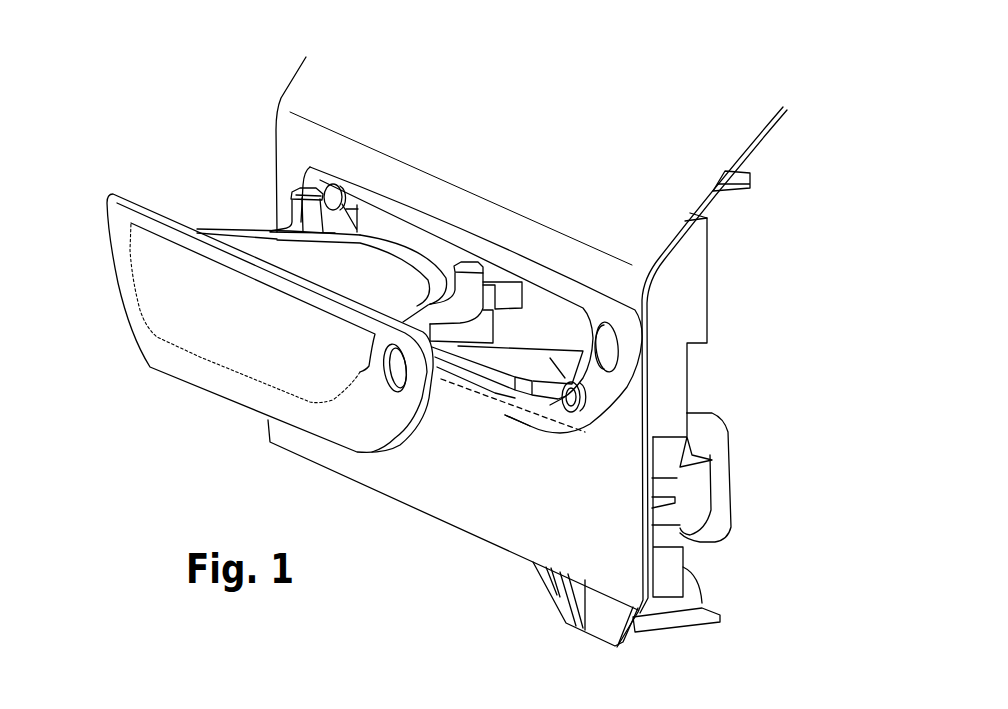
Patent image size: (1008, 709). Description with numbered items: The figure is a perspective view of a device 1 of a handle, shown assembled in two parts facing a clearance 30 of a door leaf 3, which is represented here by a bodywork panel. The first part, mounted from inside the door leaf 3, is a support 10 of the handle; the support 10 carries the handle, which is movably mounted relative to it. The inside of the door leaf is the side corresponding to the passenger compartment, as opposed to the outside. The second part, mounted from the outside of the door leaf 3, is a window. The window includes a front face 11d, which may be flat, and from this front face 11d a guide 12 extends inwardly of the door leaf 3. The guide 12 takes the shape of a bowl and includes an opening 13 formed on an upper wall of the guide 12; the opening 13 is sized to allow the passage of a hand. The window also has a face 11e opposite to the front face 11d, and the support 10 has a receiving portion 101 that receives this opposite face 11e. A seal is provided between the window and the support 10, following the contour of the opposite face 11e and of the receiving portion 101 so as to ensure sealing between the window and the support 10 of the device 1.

The device of the handle 1 is at (140, 107).
The door leaf 3 is at (268, 72).
The support of the handle 10 is at (785, 273).
The front face 11d is at (197, 367).
The opposite face 11e is at (130, 197).
The guide 12 is at (223, 228).
The opening 13 is at (270, 235).
The clearance 30 is at (512, 350).
The receiving portion 101 is at (522, 403).